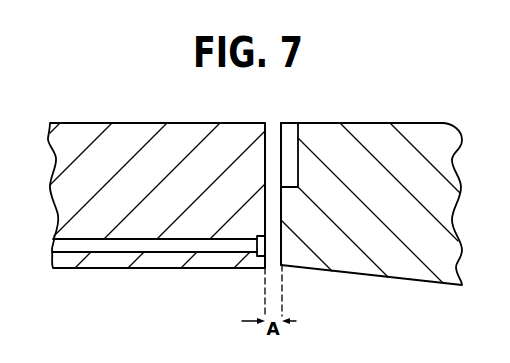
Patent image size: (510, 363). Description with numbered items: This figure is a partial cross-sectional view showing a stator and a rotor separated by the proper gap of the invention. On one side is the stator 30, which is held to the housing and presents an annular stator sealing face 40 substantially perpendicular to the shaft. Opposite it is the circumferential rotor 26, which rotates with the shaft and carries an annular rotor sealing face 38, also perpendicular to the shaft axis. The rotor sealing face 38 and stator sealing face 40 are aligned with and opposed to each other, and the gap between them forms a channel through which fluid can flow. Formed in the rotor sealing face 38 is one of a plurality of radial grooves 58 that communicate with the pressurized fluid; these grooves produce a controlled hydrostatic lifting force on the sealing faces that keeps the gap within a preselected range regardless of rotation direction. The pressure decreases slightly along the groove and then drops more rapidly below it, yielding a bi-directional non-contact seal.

The rotor 26 is at (382, 277).
The stator 30 is at (143, 268).
The rotor sealing face 38 is at (281, 213).
The stator sealing face 40 is at (265, 122).
The radial groove 58 is at (291, 133).